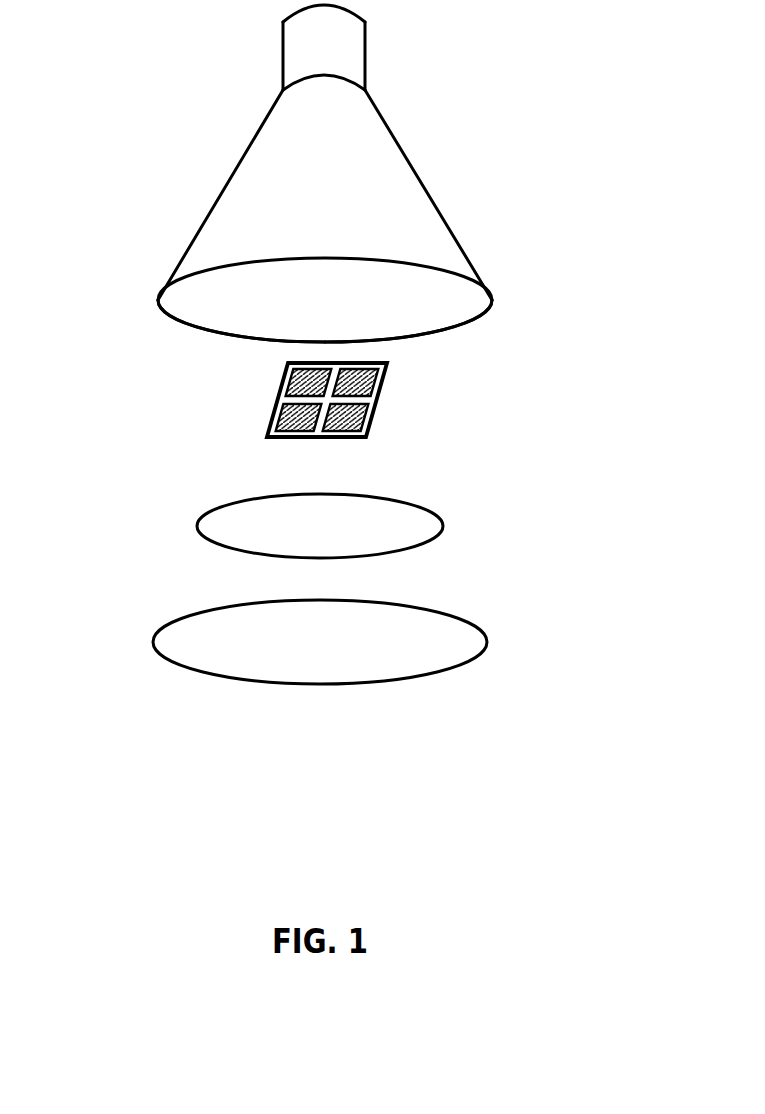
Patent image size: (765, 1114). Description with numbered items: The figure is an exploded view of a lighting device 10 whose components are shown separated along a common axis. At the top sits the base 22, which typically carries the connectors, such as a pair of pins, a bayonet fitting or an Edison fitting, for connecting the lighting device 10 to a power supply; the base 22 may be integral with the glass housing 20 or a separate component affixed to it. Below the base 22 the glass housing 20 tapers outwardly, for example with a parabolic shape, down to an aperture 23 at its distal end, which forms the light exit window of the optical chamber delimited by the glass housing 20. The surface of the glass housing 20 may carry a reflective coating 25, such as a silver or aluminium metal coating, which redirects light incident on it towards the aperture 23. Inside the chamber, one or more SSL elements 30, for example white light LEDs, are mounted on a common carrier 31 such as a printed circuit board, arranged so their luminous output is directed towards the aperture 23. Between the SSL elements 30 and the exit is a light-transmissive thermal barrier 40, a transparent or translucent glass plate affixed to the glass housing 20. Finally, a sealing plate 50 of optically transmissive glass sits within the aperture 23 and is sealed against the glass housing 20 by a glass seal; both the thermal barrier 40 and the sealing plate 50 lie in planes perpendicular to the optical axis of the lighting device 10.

The lighting device 10 is at (322, 818).
The glass housing 20 is at (390, 177).
The base 22 is at (348, 51).
The aperture 23 is at (455, 303).
The reflective coating 25 is at (207, 305).
The SSL elements 30 is at (344, 400).
The common carrier 31 is at (309, 382).
The light-transmissive thermal barrier 40 is at (433, 510).
The sealing plate 50 is at (463, 615).